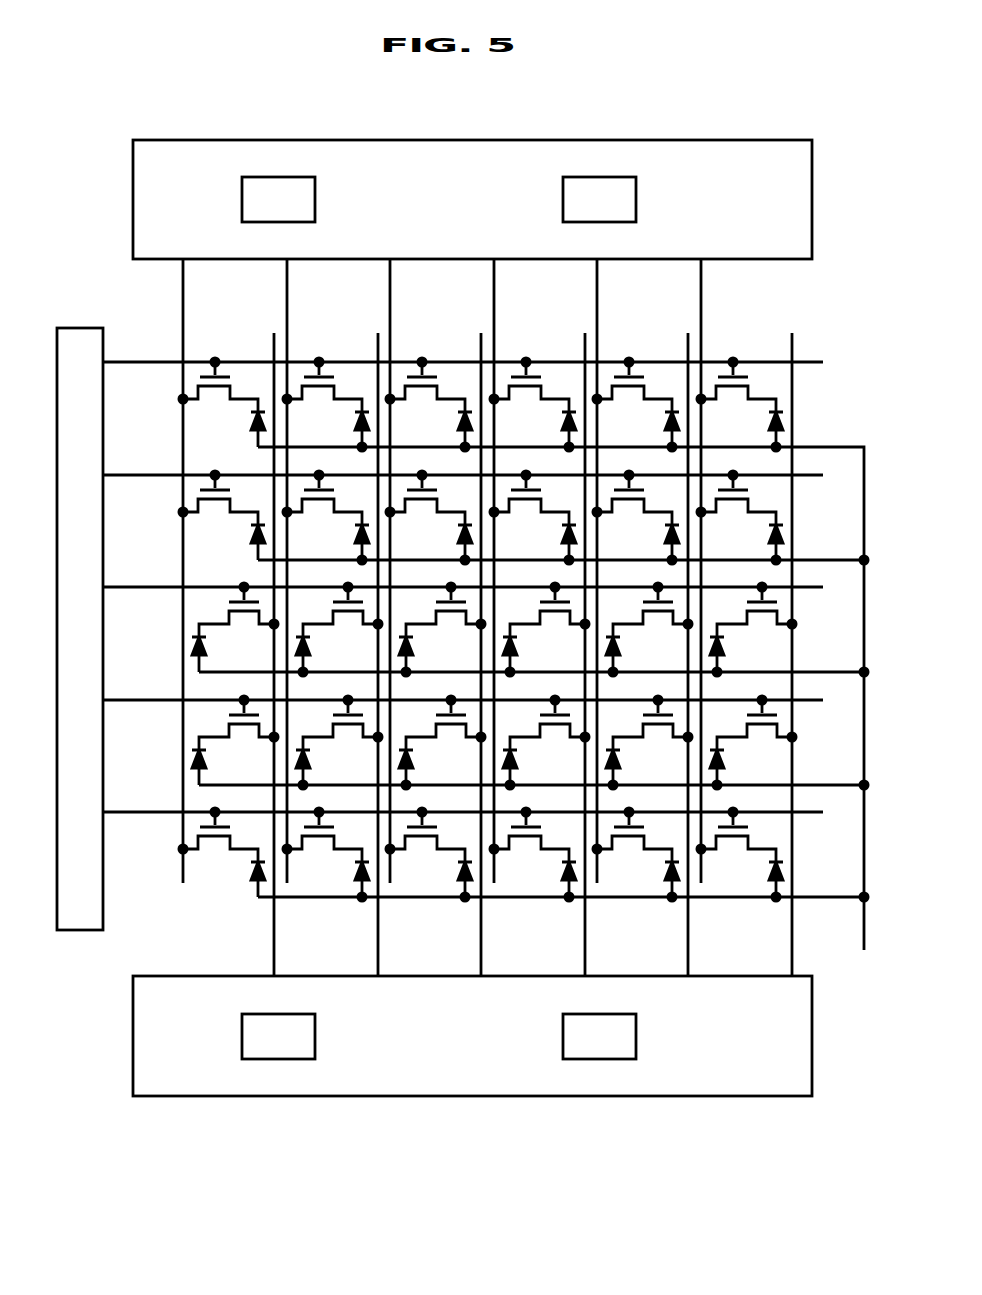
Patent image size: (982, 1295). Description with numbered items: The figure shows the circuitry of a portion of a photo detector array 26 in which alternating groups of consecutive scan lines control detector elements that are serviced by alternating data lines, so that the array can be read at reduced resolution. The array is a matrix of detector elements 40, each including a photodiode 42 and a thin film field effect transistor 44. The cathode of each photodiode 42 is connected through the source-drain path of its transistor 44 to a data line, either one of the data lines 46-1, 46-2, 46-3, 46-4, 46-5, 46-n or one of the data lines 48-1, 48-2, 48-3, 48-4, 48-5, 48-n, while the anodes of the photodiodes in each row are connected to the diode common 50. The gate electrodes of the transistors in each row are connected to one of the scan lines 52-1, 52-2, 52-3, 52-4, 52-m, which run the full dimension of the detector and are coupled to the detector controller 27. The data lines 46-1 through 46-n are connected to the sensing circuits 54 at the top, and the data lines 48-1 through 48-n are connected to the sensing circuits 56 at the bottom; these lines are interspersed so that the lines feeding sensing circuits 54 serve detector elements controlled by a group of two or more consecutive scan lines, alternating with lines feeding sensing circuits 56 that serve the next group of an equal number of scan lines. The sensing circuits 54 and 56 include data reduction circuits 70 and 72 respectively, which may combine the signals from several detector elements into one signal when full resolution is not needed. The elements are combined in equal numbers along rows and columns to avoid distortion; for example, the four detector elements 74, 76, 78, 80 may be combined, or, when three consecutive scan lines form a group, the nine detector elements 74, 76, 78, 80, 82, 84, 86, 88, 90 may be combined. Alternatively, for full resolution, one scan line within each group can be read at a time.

The photo detector array 26 is at (95, 277).
The detector controller 27 is at (75, 339).
The detector element 40 is at (195, 486).
The photodiode 42 is at (258, 420).
The thin film field effect transistor 44 is at (194, 372).
The data line 46-1 is at (187, 293).
The data line 46-2 is at (291, 293).
The data line 46-3 is at (394, 293).
The data line 46-4 is at (498, 293).
The data line 46-5 is at (601, 293).
The data line 46-n is at (705, 293).
The data line 48-1 is at (278, 938).
The data line 48-2 is at (382, 938).
The data line 48-3 is at (485, 938).
The data line 48-4 is at (589, 938).
The data line 48-5 is at (692, 938).
The data line 48-n is at (796, 968).
The diode common 50 is at (538, 716).
The scan line 52-1 is at (147, 361).
The scan line 52-2 is at (149, 474).
The scan line 52-3 is at (149, 586).
The scan line 52-4 is at (149, 699).
The scan line 52-m is at (149, 811).
The sensing circuits 54 is at (150, 150).
The sensing circuits 56 is at (181, 1090).
The data reduction circuit 70 is at (303, 200).
The data reduction circuit 72 is at (303, 1035).
The detector element 74 is at (541, 401).
The detector element 76 is at (644, 401).
The detector element 78 is at (541, 514).
The detector element 80 is at (644, 514).
The detector element 82 is at (522, 630).
The detector element 84 is at (625, 630).
The detector element 86 is at (748, 401).
The detector element 88 is at (748, 514).
The detector element 90 is at (729, 630).